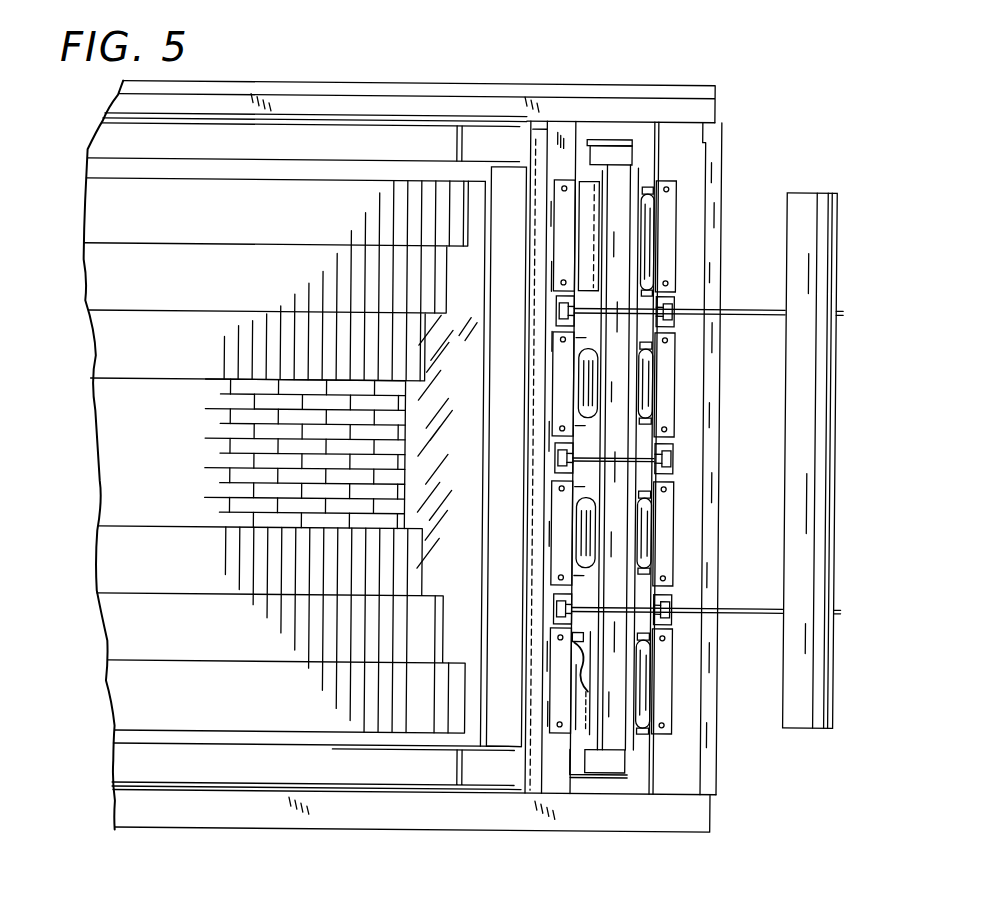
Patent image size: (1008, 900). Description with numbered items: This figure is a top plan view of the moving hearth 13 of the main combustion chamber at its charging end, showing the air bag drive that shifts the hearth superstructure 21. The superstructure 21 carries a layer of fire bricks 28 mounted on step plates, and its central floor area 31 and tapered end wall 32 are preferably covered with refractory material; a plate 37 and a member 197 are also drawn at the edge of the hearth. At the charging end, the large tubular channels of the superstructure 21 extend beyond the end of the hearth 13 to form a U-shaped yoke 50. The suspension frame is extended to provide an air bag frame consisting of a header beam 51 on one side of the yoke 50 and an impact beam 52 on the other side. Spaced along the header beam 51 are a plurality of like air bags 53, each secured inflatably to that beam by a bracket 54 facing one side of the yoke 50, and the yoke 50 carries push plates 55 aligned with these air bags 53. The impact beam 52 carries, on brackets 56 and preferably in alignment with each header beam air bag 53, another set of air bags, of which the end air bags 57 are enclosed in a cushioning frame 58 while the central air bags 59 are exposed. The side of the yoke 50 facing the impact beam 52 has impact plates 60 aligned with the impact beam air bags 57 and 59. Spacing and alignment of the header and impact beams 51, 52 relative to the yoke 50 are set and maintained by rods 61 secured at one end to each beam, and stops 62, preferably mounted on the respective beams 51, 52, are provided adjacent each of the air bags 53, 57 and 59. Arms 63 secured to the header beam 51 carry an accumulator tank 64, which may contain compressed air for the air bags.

The hearth 13 is at (84, 439).
The movable superstructure 21 is at (98, 133).
The fire bricks 28 is at (238, 561).
The central floor area 31 is at (162, 467).
The end wall 32 is at (470, 582).
The top plate 37 is at (121, 103).
The top flange 197 is at (497, 84).
The U-shaped yoke 50 is at (600, 139).
The header beam 51 is at (682, 138).
The impact beam 52 is at (556, 127).
The air bags 53 is at (652, 255).
The bracket 54 is at (657, 273).
The push plates 55 is at (642, 188).
The brackets 56 is at (570, 704).
The end air bags 57 is at (577, 648).
The cushioning frame 58 is at (576, 755).
The central air bags 59 is at (580, 509).
The impact plates 60 is at (556, 447).
The rods 61 is at (592, 460).
The stops 62 is at (567, 320).
The arms 63 is at (758, 602).
The accumulator tank 64 is at (835, 526).